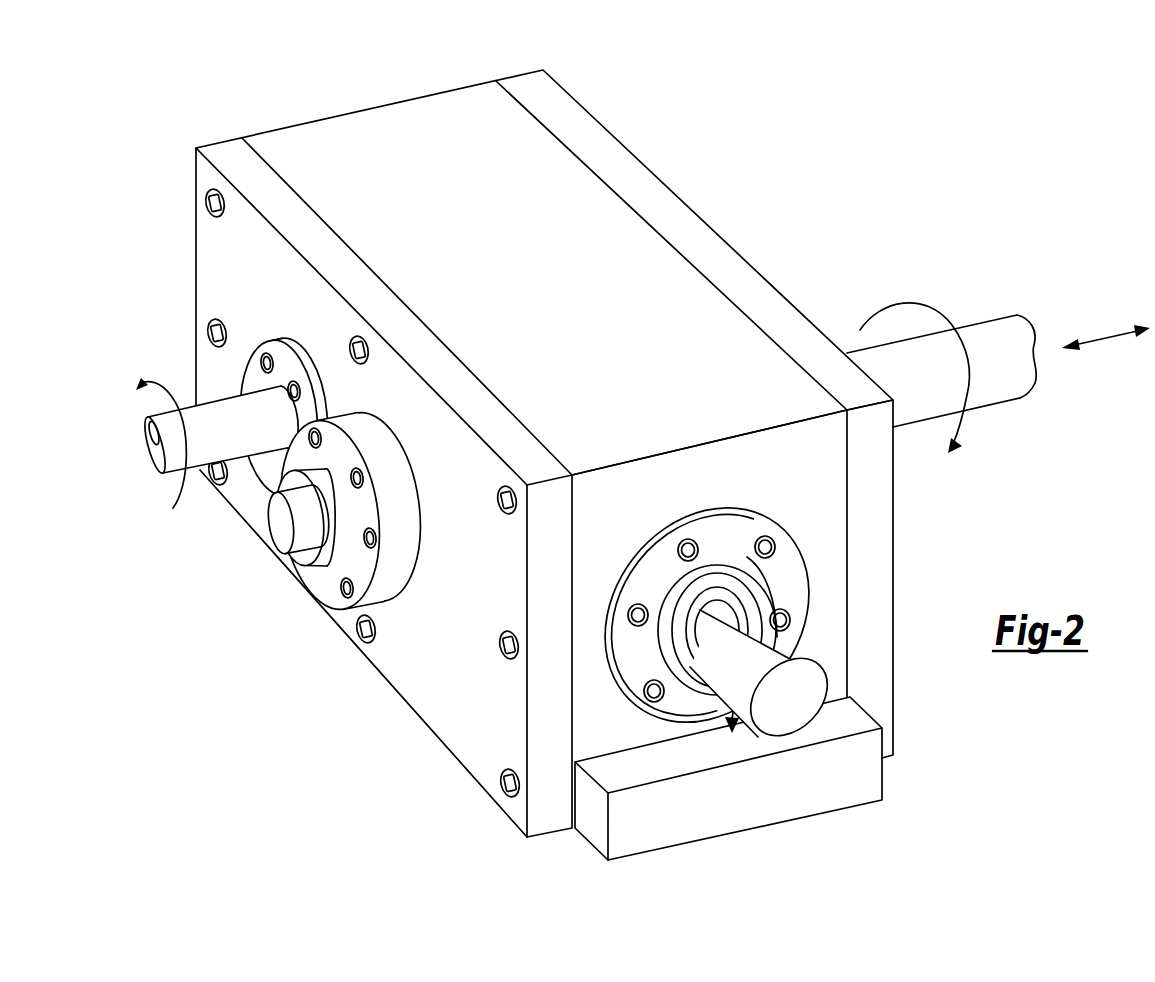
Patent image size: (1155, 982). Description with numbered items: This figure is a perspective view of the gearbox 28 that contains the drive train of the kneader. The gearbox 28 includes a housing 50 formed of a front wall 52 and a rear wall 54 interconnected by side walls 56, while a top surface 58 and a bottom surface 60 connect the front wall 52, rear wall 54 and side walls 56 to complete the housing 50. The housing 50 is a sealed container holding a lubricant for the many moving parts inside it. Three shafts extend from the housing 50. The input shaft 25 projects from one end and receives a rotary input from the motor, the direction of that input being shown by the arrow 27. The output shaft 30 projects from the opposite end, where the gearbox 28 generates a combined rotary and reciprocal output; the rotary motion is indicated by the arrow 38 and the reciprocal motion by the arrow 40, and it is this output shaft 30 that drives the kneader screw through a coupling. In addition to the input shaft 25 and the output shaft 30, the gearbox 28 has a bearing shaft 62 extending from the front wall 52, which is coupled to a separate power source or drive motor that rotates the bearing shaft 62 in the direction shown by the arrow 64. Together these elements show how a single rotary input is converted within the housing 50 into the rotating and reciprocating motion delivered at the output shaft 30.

The gearbox 28 is at (629, 95).
The housing 50 is at (667, 178).
The top surface 58 is at (513, 137).
The rear wall 54 is at (357, 110).
The side walls 56 is at (537, 593).
The front wall 52 is at (825, 492).
The bottom surface 60 is at (590, 843).
The bearing shaft 62 is at (802, 713).
The arrow 64 is at (833, 648).
The output shaft 30 is at (983, 340).
The arrow 38 is at (930, 307).
The arrow 40 is at (1098, 338).
The input shaft 25 is at (172, 460).
The arrow 27 is at (176, 508).